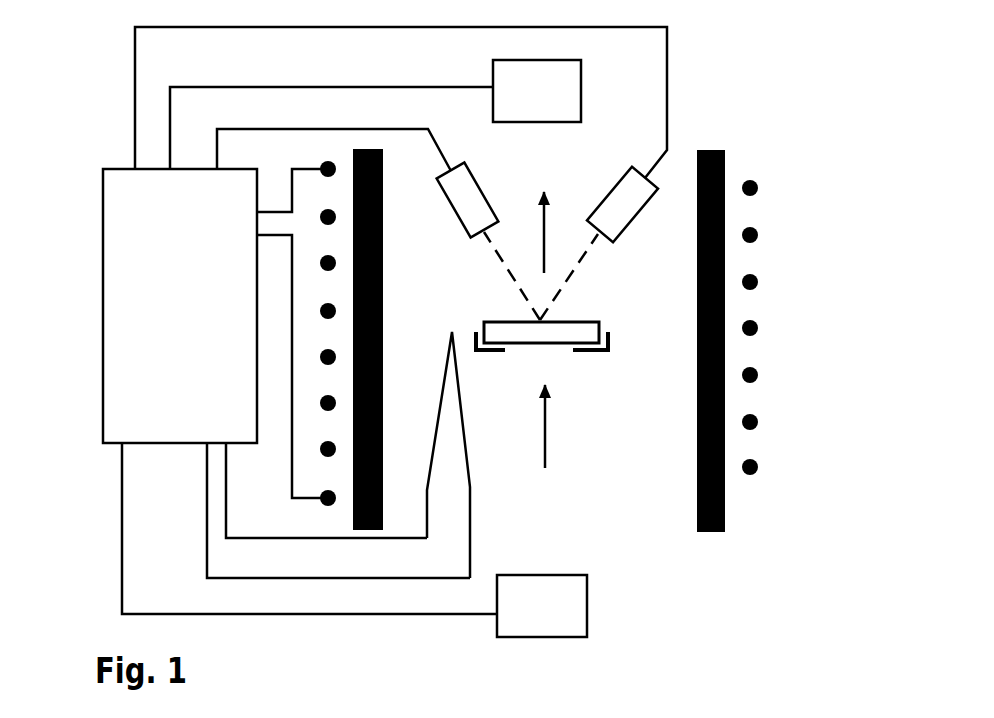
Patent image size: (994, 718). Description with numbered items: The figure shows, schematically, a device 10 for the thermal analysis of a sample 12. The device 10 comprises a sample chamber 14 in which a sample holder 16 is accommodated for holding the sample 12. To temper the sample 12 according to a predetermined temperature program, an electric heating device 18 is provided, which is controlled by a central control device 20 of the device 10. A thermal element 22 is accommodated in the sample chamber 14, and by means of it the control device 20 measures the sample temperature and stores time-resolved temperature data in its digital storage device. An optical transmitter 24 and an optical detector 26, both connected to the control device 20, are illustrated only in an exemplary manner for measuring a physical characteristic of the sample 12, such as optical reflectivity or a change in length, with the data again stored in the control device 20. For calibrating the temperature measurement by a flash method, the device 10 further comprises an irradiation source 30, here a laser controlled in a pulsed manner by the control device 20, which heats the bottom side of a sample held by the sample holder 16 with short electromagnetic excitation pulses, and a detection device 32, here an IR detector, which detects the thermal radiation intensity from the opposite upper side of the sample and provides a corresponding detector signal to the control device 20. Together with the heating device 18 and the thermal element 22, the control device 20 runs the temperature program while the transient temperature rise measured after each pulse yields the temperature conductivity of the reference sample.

The device 10 is at (712, 78).
The sample 12 is at (572, 330).
The sample chamber 14 is at (639, 520).
The sample holder 16 is at (607, 335).
The electric heating device 18 is at (775, 268).
The central control device 20 is at (193, 323).
The thermal element 22 is at (430, 349).
The optical transmitter 24 is at (472, 218).
The optical detector 26 is at (630, 208).
The irradiation source 30 is at (558, 619).
The detection device 32 is at (554, 103).